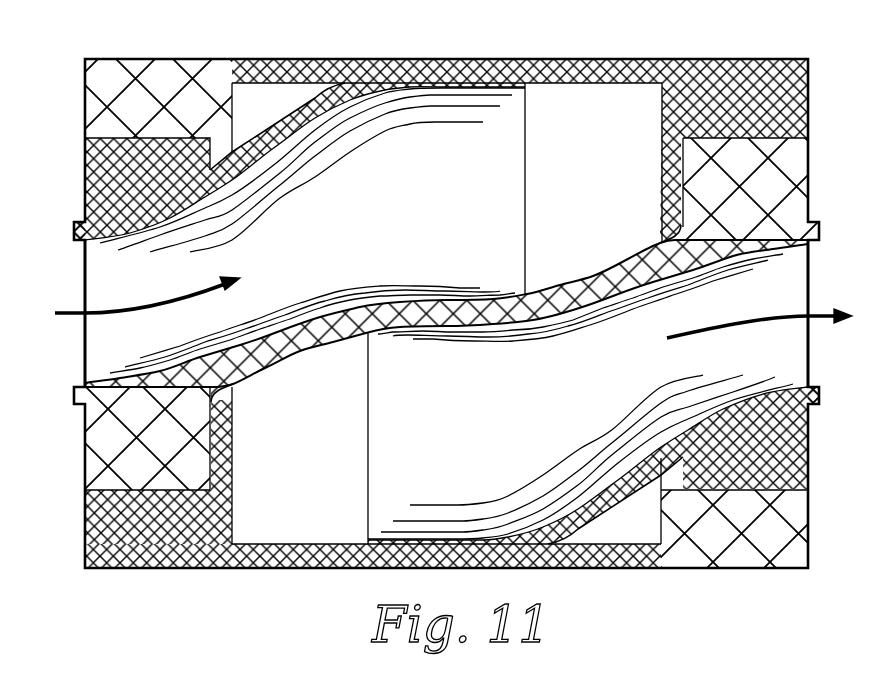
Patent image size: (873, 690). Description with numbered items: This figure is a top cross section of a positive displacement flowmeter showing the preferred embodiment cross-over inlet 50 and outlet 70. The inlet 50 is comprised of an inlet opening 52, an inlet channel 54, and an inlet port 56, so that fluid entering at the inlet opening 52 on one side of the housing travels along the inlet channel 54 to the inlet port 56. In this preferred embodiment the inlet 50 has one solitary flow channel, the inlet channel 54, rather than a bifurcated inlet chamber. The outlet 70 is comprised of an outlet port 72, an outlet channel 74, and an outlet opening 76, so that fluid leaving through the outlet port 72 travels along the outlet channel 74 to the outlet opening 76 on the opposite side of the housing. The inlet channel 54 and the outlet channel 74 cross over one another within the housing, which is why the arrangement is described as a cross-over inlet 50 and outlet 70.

The inlet 50 is at (62, 272).
The inlet opening 52 is at (95, 345).
The inlet channel 54 is at (300, 232).
The inlet port 56 is at (588, 133).
The outlet 70 is at (818, 268).
The outlet port 72 is at (300, 493).
The outlet channel 74 is at (575, 392).
The outlet opening 76 is at (780, 352).